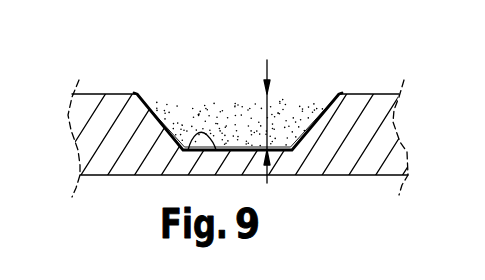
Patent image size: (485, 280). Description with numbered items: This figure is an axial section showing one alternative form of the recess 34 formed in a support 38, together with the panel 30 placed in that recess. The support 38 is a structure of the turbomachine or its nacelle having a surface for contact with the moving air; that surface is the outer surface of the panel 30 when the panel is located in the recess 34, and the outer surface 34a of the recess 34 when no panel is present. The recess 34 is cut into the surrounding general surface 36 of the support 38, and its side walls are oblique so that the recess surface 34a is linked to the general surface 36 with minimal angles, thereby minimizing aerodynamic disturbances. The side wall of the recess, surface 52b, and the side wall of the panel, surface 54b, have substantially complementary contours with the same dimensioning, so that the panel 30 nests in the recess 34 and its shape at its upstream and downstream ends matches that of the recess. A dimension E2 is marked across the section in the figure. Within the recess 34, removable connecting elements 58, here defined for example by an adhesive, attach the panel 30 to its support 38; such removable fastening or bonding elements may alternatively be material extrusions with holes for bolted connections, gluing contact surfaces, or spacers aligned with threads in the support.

The panel 30 is at (221, 78).
The recess 34 is at (318, 150).
The outer surface of the recess 34a is at (183, 152).
The surrounding general surface 36 is at (110, 94).
The support 38 is at (370, 184).
The side wall surface of the recess 52b is at (165, 120).
The side wall surface of the panel 54b is at (168, 120).
The removable connecting elements 58 is at (177, 138).
The groove depth E2 is at (267, 115).